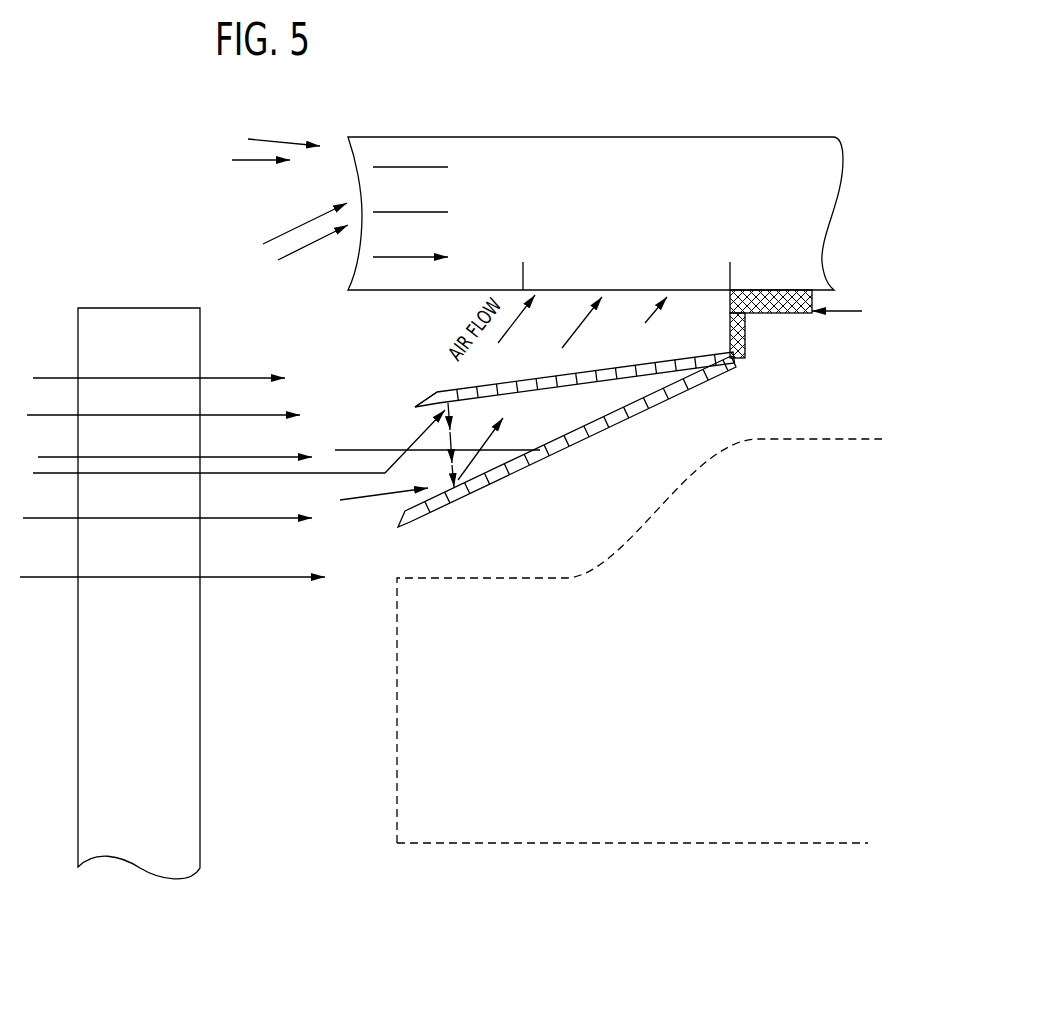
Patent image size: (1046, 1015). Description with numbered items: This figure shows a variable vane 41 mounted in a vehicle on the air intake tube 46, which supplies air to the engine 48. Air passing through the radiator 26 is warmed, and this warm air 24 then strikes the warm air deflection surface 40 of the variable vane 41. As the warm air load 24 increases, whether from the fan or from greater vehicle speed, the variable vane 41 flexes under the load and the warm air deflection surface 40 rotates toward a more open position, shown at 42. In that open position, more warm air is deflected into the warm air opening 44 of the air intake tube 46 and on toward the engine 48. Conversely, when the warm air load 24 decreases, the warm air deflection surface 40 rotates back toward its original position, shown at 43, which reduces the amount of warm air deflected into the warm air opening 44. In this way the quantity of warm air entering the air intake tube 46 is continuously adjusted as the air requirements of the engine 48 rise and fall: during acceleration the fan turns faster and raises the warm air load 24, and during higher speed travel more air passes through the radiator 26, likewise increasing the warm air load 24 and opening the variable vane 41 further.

The warm air 24 is at (245, 378).
The radiator 26 is at (185, 845).
The warm air deflection surface 40 is at (468, 389).
The variable vane 41 is at (787, 315).
The more open position 42 is at (405, 527).
The original position 43 is at (425, 401).
The warm air opening 44 is at (707, 288).
The air intake tube 46 is at (420, 153).
The engine 48 is at (720, 756).